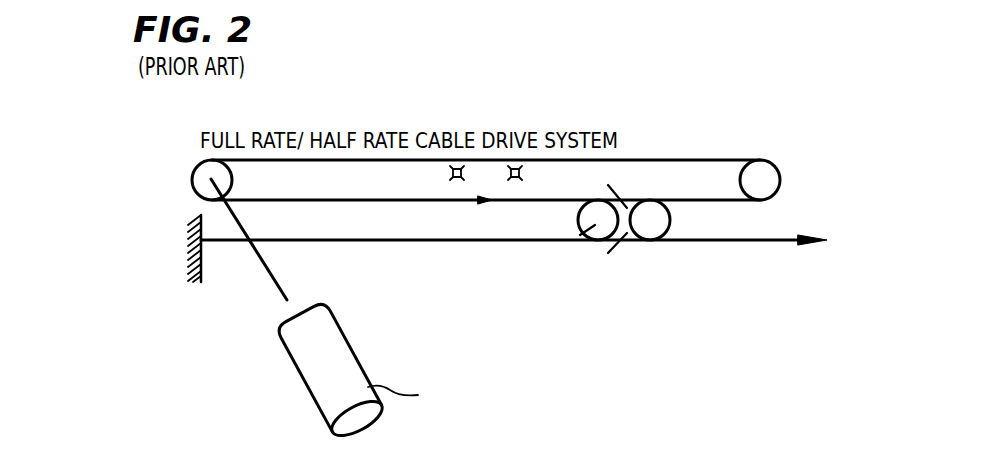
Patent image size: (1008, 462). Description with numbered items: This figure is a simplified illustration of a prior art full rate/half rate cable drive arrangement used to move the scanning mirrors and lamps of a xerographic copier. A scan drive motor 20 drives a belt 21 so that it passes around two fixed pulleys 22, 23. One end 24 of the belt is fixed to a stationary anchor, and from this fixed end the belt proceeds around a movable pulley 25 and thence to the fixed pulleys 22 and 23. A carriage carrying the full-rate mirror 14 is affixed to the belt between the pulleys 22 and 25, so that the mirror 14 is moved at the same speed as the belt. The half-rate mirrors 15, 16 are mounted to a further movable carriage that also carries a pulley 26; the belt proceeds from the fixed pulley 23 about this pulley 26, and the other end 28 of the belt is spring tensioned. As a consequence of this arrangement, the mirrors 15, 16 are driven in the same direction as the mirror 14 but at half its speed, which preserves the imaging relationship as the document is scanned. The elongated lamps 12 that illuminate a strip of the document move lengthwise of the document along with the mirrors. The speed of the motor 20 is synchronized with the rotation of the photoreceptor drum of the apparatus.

The elongated lamps 12 is at (450, 173).
The mirror 14 is at (490, 203).
The mirror 15 is at (623, 205).
The mirror 16 is at (625, 236).
The scan drive motor 20 is at (335, 357).
The belt 21 is at (413, 242).
The fixed pulley 22 is at (193, 172).
The fixed pulley 23 is at (770, 181).
The fixed end of belt 24 is at (201, 250).
The movable pulley 25 is at (580, 236).
The pulley 26 is at (652, 223).
The other end of belt 28 is at (755, 242).